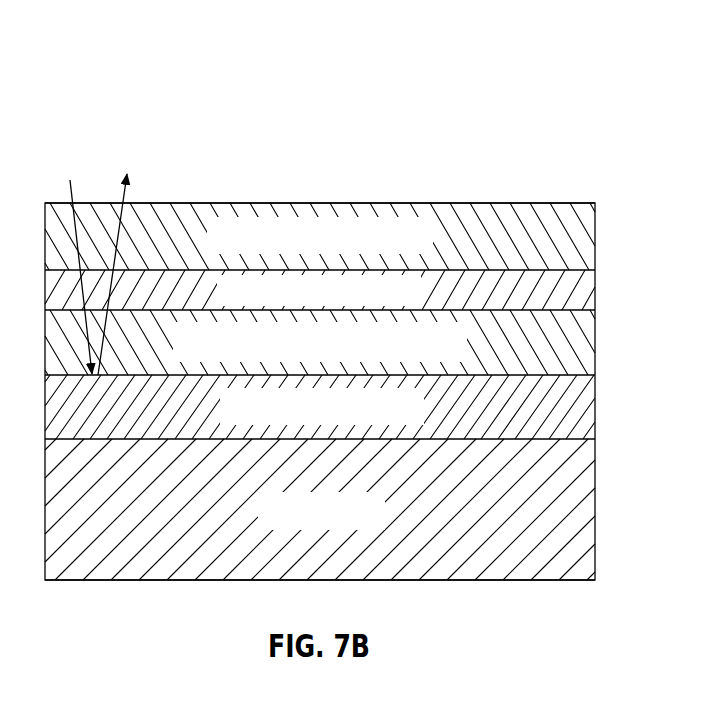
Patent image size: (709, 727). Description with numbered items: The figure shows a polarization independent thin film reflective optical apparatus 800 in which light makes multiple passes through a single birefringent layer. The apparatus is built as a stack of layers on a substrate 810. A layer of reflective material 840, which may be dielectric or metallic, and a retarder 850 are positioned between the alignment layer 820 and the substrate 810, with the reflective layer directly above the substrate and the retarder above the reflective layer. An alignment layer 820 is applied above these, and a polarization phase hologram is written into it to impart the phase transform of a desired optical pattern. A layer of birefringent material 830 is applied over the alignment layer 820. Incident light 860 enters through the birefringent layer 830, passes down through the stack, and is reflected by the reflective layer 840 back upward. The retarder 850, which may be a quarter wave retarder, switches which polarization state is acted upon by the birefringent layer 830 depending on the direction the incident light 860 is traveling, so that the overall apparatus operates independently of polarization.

The thin film reflective optical apparatus 800 is at (602, 80).
The substrate 810 is at (582, 477).
The alignment layer 820 is at (582, 283).
The layer of birefringent material 830 is at (582, 233).
The layer of reflective material 840 is at (582, 405).
The retarder 850 is at (582, 340).
The incident light 860 is at (125, 177).